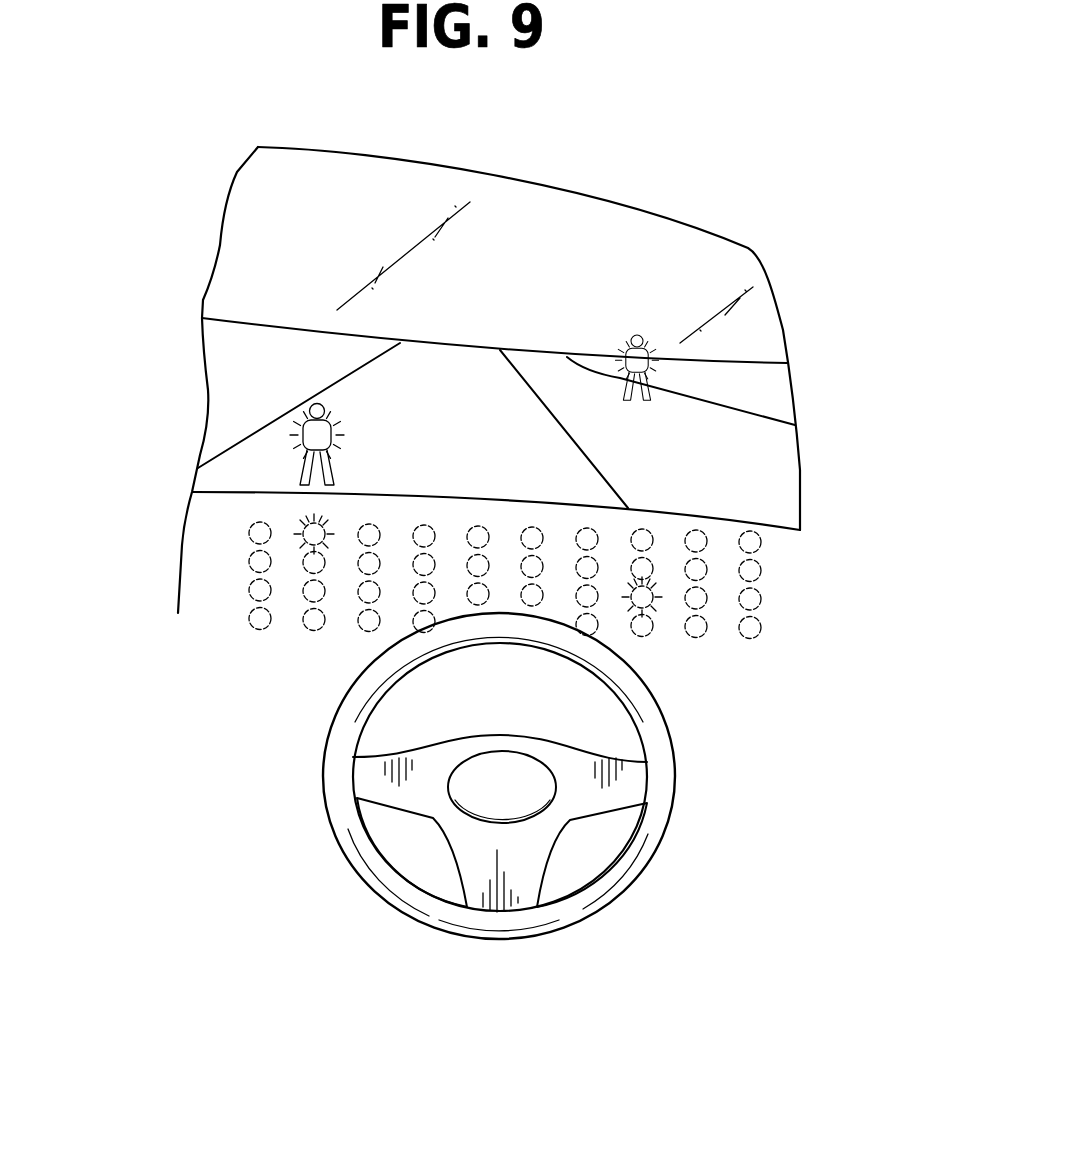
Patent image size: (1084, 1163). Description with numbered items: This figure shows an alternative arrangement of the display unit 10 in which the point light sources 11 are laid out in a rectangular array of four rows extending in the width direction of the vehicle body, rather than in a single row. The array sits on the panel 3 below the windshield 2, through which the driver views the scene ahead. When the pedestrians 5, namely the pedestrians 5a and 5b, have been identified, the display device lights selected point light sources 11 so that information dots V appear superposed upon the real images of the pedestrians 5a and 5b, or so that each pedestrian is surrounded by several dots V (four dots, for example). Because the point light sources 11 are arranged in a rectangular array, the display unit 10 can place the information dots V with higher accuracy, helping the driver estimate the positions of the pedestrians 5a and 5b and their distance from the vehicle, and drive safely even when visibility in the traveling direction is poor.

The windshield 2 is at (642, 238).
The instrument panel (dashboard) 3 is at (208, 570).
The display image 5 is at (470, 362).
The pedestrian 5a is at (323, 388).
The pedestrian 5b is at (626, 322).
The information dots V is at (495, 362).
The display unit 10 is at (597, 595).
The point light sources 11 is at (761, 542).